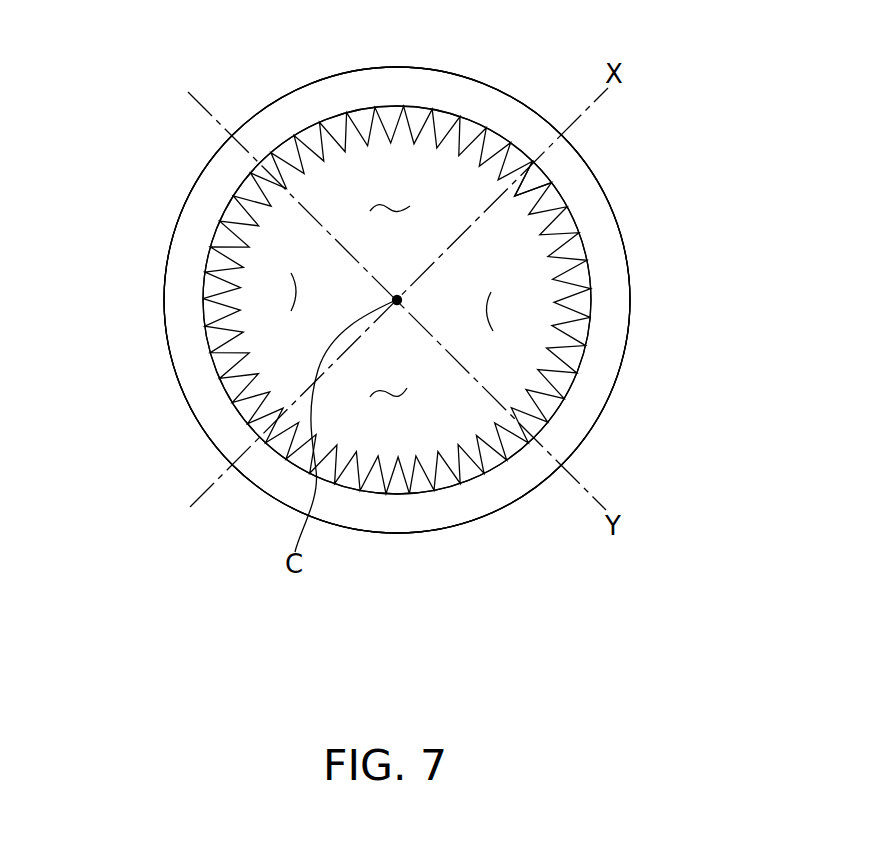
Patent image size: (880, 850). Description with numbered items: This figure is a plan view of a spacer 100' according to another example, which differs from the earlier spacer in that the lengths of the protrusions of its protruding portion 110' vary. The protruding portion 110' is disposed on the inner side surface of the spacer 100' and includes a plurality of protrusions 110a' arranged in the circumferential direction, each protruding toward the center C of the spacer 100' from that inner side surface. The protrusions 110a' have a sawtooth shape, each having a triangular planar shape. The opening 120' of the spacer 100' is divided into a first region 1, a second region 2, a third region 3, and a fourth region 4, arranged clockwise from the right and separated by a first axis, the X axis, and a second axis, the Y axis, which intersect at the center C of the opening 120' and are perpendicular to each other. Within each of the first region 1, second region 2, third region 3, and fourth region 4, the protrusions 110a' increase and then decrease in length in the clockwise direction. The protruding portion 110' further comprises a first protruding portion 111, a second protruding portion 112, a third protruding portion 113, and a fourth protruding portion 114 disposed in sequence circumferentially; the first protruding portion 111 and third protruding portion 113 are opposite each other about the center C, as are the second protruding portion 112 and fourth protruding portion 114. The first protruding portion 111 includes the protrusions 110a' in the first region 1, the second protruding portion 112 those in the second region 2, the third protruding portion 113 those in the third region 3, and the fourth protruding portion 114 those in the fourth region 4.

The spacer 100' is at (397, 270).
The protruding portion 110' is at (423, 371).
The first protruding portion 111 is at (619, 233).
The second protruding portion 112 is at (443, 480).
The third protruding portion 113 is at (213, 337).
The fourth protruding portion 114 is at (347, 122).
The protrusion 110a' is at (515, 217).
The opening 120' is at (476, 171).
The first region 1 is at (487, 312).
The second region 2 is at (383, 400).
The third region 3 is at (290, 277).
The fourth region 4 is at (383, 203).